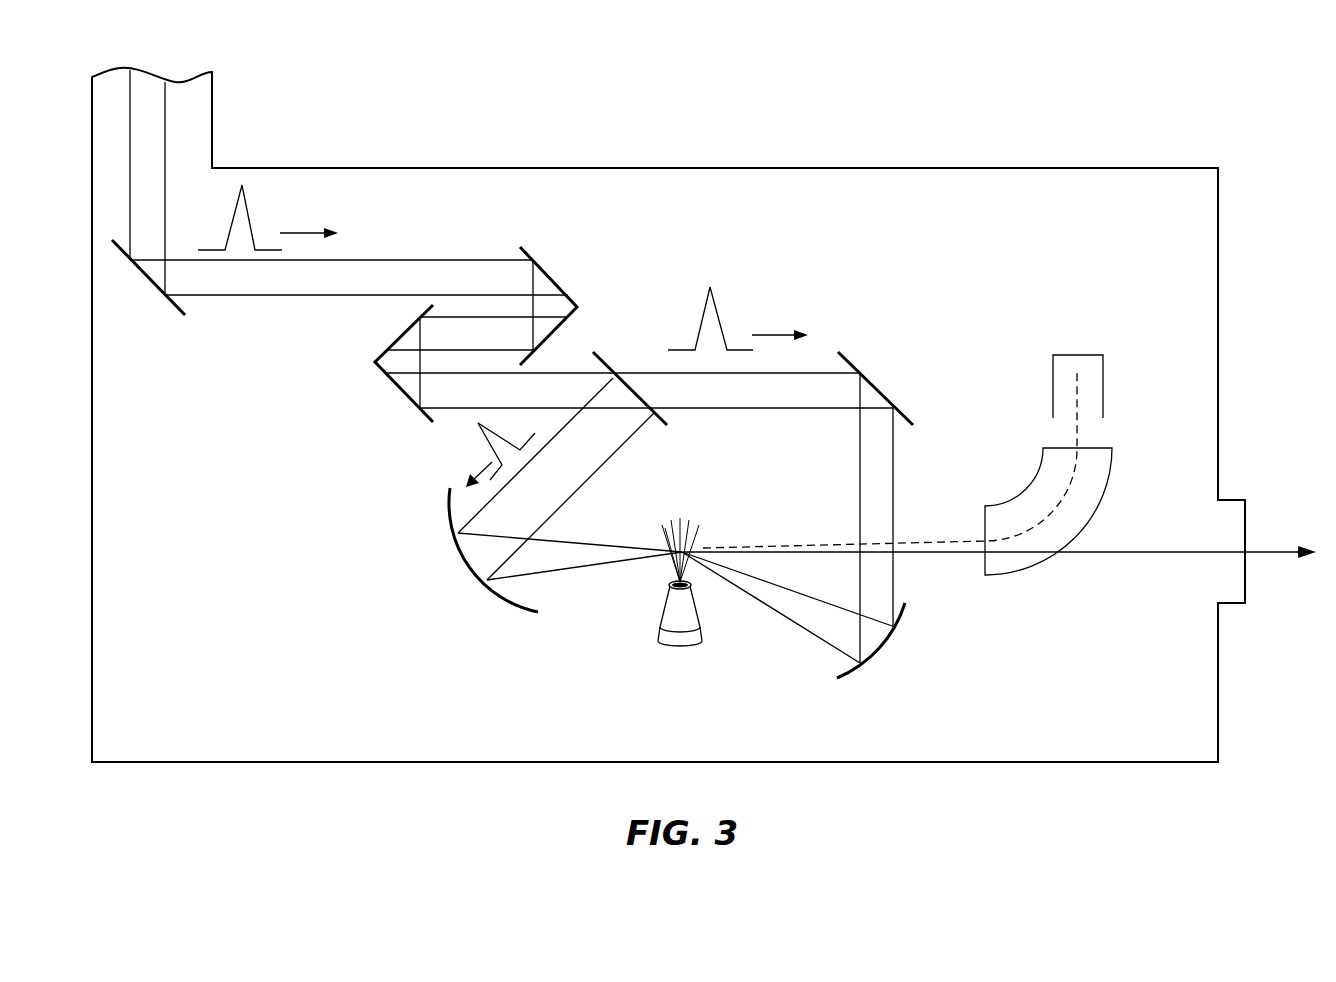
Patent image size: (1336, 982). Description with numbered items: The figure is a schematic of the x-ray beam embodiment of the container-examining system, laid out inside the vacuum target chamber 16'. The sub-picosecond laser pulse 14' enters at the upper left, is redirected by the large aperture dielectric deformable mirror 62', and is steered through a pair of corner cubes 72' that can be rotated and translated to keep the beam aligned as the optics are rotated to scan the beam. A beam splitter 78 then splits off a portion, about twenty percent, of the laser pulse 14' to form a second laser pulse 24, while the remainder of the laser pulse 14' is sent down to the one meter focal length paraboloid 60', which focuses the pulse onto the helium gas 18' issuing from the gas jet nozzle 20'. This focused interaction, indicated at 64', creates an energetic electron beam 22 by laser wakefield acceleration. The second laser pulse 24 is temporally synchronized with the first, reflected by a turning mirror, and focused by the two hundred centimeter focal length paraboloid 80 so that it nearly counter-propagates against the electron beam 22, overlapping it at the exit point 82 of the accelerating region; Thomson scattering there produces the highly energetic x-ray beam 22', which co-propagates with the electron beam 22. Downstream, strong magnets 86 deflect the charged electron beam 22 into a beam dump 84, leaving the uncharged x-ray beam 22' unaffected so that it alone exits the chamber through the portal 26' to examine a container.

The laser pulse 14' is at (366, 334).
The target chamber 16' is at (668, 415).
The helium gas 18' is at (691, 527).
The gas jet nozzle 20' is at (673, 642).
The electron beam 22 is at (890, 459).
The x-ray beam 22' is at (999, 517).
The second laser pulse 24 is at (720, 309).
The portal 26' is at (1271, 522).
The paraboloid 60' is at (542, 550).
The deformable mirror 62' is at (148, 208).
The focused laser beam 64' is at (657, 517).
The corner cubes 72' is at (474, 332).
The beam splitter 78 is at (607, 362).
The paraboloid 80 is at (883, 650).
The exit point 82 is at (716, 535).
The beam dump 84 is at (1090, 355).
The magnets 86 is at (1020, 575).